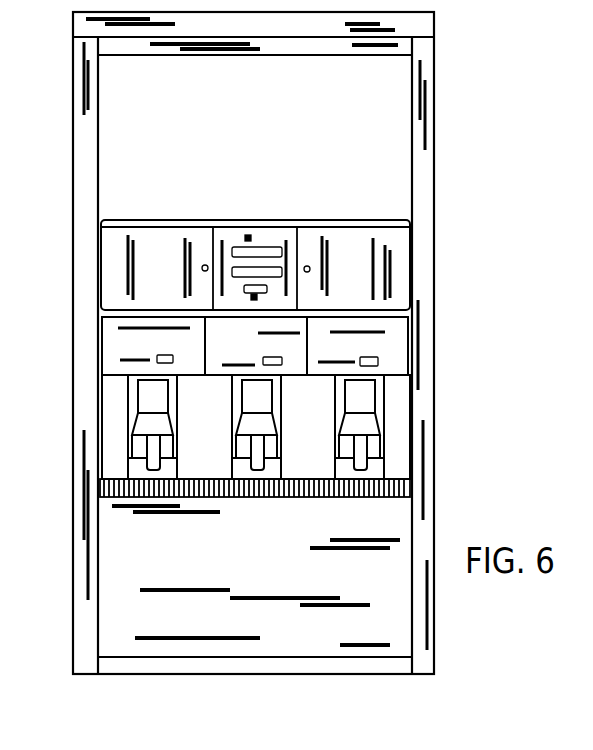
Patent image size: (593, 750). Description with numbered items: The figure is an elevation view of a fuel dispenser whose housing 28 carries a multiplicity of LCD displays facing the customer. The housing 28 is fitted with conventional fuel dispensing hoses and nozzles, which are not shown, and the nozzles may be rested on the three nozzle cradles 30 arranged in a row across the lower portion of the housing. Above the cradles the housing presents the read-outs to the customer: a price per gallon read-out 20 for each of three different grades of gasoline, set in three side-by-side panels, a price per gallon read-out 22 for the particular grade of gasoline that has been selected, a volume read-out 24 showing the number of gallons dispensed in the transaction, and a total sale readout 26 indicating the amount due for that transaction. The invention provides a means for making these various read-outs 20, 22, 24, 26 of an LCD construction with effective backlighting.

The price per gallon read-out 20 is at (157, 355).
The price per gallon read-out for selected grade 22 is at (267, 289).
The volume read-out 24 is at (230, 272).
The total sale readout 26 is at (249, 238).
The fuel dispenser housing 28 is at (398, 255).
The nozzle cradle 30 is at (360, 455).